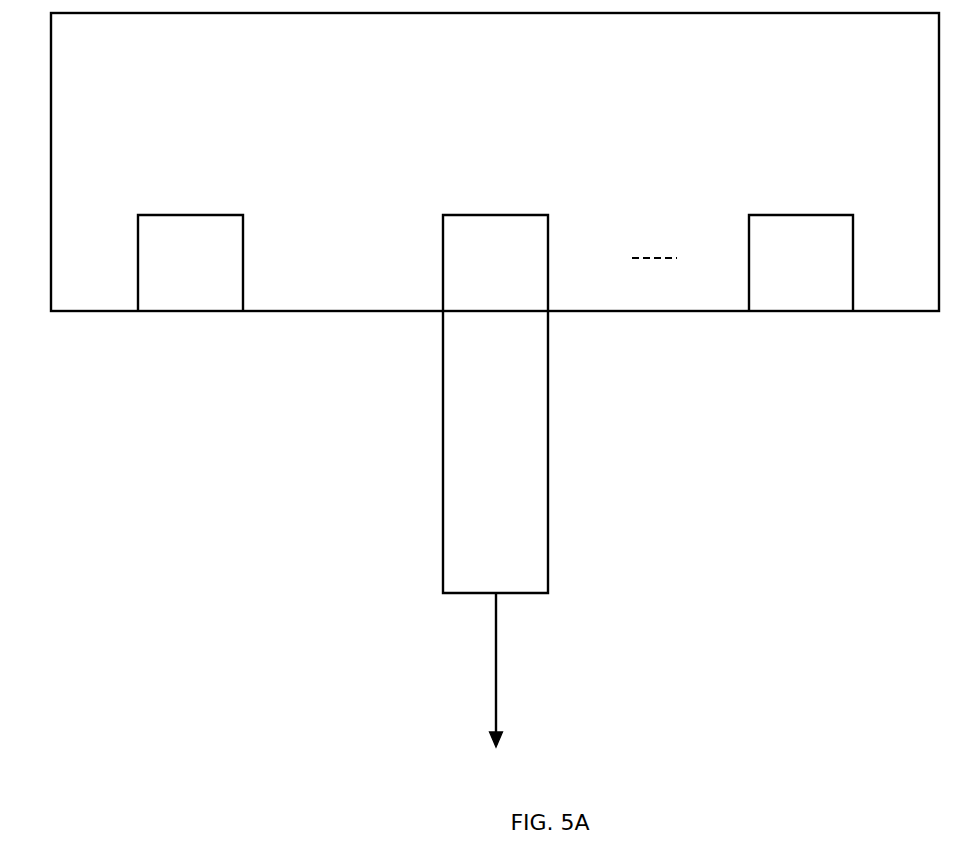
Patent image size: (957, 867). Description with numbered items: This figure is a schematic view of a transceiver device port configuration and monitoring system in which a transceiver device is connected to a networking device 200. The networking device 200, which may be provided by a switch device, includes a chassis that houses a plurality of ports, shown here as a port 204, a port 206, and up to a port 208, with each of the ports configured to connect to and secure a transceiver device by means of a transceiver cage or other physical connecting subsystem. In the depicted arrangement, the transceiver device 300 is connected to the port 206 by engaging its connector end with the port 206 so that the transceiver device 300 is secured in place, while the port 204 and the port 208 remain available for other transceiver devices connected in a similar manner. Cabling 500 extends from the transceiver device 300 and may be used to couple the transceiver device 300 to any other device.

The networking device 200 is at (495, 162).
The port 204 is at (190, 263).
The port 206 is at (496, 215).
The port 208 is at (801, 263).
The transceiver device 300 is at (548, 452).
The cabling 500 is at (496, 665).